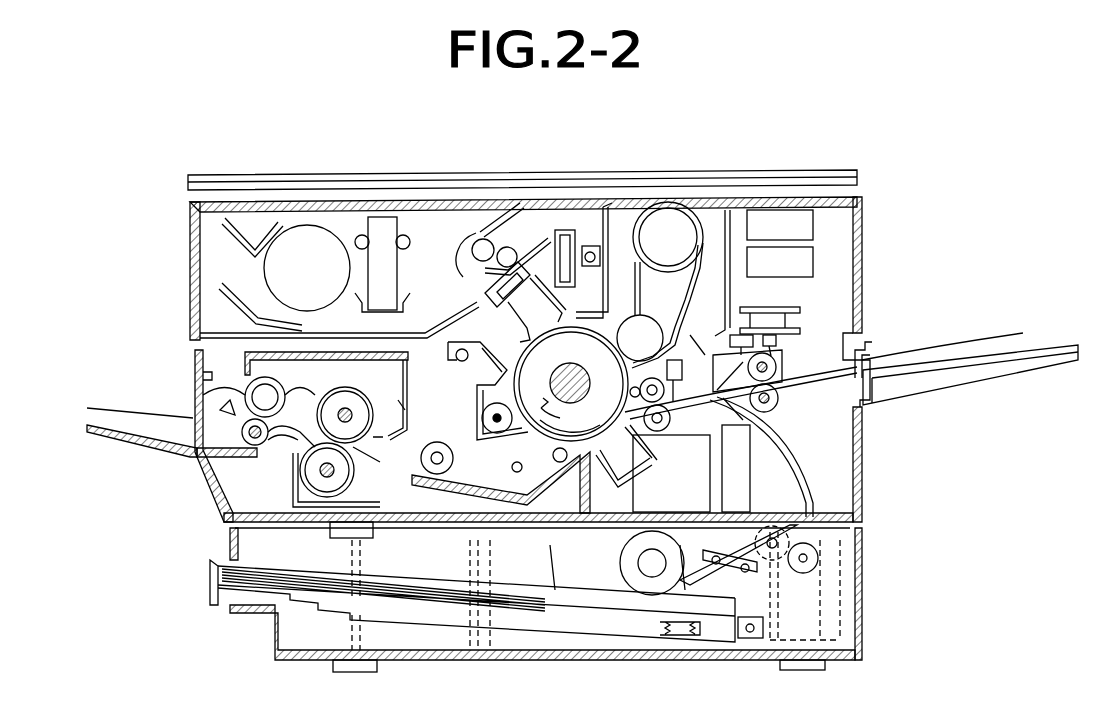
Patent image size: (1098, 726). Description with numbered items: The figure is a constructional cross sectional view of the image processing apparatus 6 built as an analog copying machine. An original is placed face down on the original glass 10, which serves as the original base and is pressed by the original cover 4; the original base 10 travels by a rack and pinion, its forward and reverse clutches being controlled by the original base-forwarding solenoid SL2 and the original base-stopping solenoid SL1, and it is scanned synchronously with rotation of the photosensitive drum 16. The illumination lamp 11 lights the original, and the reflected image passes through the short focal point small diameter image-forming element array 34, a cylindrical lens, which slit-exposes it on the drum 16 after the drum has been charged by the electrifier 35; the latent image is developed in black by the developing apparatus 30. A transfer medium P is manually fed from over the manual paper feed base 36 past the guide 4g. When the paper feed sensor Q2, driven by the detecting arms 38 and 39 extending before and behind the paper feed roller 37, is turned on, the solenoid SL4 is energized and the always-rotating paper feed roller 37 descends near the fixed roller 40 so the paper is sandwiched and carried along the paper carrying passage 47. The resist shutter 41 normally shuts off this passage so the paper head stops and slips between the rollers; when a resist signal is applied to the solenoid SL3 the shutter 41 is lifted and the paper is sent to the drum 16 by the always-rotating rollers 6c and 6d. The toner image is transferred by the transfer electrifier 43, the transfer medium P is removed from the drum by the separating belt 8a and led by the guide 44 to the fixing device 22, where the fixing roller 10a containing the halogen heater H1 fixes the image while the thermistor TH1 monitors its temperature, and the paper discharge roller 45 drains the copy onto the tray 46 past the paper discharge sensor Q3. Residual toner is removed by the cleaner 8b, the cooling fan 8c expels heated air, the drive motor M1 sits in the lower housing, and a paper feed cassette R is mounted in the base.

The original cover 4 is at (290, 177).
The upper unit housing 6 is at (862, 174).
The separating belt 8a is at (553, 455).
The cleaner 8b is at (484, 407).
The cooling fan 8c is at (268, 282).
The original glass 10 is at (572, 184).
The fixing roller 10a is at (347, 410).
The fluorescent lamp 11 is at (478, 241).
The photosensitive drum 16 is at (580, 345).
The fixing device 22 is at (410, 368).
The developing apparatus 30 is at (712, 250).
The short focal point small diameter image-forming element array 34 is at (565, 229).
The electrifier 35 is at (528, 286).
The manual paper feed base 36 is at (1020, 372).
The paper feed roller 37 is at (866, 300).
The detecting arm 38 is at (777, 364).
The detecting arm 39 is at (736, 316).
The fixed roller 40 is at (779, 398).
The resist shutter 41 is at (683, 370).
The transfer electrifier 43 is at (648, 463).
The guide 44 is at (467, 478).
The paper discharge roller 45 is at (190, 460).
The tray 46 is at (100, 432).
The paper carrying passage 47 is at (678, 404).
The exit guide 4g is at (865, 343).
The roller 6c is at (590, 378).
The roller 6d is at (574, 425).
The halogen heater H1 is at (286, 395).
The motor M1 is at (705, 496).
The transfer medium P is at (978, 334).
The paper feed sensor Q2 is at (775, 350).
The paper discharge sensor Q3 is at (196, 392).
The paper feed cassette R is at (215, 565).
The original base-stopping solenoid SL1 is at (808, 260).
The original base-forwarding solenoid SL2 is at (808, 227).
The solenoid SL3 is at (700, 328).
The solenoid SL4 is at (790, 330).
The thermistor TH1 is at (403, 408).